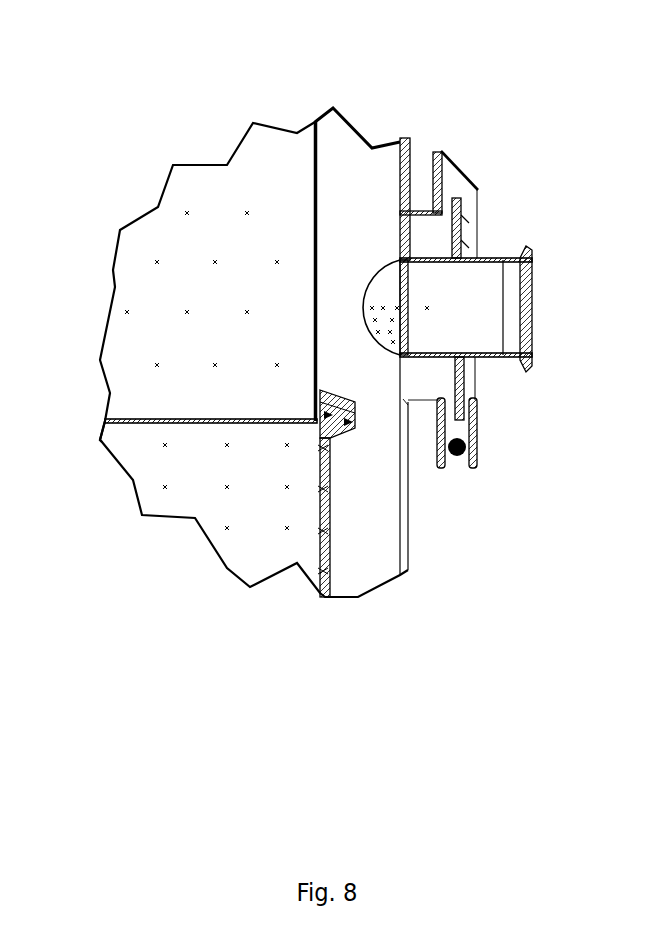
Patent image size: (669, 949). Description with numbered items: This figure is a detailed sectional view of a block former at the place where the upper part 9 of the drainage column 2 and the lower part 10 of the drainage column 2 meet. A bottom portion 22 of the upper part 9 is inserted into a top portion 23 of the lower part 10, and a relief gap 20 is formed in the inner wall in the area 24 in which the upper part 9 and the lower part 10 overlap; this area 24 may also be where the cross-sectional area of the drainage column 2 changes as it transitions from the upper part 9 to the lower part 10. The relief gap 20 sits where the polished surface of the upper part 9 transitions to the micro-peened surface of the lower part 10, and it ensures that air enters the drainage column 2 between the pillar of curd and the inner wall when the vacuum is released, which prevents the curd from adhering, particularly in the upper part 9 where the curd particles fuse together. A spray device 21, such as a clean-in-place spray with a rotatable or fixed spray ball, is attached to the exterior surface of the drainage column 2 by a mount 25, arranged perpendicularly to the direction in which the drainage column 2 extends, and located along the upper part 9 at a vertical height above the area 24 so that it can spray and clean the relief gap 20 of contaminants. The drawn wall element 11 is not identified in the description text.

The drainage column 2 is at (148, 112).
The upper part of the drainage column 9 is at (193, 239).
The lower part of the drainage column 10 is at (177, 508).
The wall profile strip 11 is at (337, 158).
The relief gap 20 is at (355, 428).
The spray device 21 is at (497, 323).
The bottom portion of the upper part 22 is at (118, 407).
The top portion of the lower part 23 is at (107, 443).
The overlap area 24 is at (318, 416).
The mount 25 is at (410, 236).